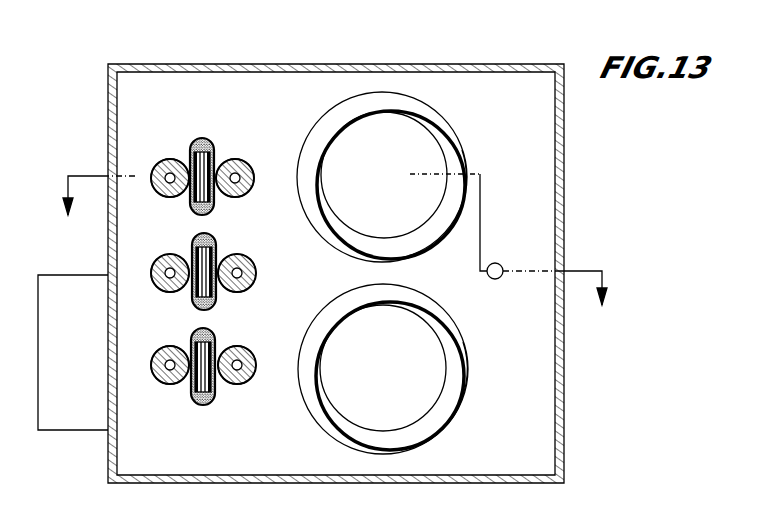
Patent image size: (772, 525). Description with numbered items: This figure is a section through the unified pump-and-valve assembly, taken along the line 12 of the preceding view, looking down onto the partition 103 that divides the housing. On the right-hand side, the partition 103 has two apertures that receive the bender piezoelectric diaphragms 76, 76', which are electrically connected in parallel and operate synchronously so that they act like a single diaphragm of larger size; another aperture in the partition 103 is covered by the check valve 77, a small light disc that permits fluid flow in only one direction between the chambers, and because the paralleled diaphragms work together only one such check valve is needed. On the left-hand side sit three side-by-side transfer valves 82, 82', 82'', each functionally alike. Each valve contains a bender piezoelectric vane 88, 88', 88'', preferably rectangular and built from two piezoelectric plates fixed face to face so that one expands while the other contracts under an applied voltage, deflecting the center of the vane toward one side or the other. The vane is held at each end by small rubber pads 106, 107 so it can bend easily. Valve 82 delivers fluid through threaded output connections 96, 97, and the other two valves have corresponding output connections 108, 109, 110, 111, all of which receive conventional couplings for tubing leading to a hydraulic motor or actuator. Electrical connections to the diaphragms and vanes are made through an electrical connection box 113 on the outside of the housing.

The section line 12 is at (341, 252).
The bender piezoelectric diaphragm 76 is at (382, 177).
The bender piezoelectric diaphragm 76' is at (383, 369).
The check valve 77 is at (497, 265).
The control valve 82 is at (194, 156).
The control valve 82' is at (195, 206).
The control valve 82'' is at (195, 344).
The bender piezoelectric vane 88 is at (235, 167).
The bender piezoelectric control vane 88' is at (218, 276).
The bender piezoelectric control vane 88'' is at (219, 370).
The output connection 96 is at (246, 190).
The output connection 97 is at (164, 162).
The partition 103 is at (290, 452).
The rubber pad 106 is at (203, 138).
The rubber pad 107 is at (211, 212).
The output connection 108 is at (246, 258).
The output connection 109 is at (168, 258).
The output connection 110 is at (246, 352).
The output connection 111 is at (168, 352).
The electrical connection box 113 is at (84, 430).